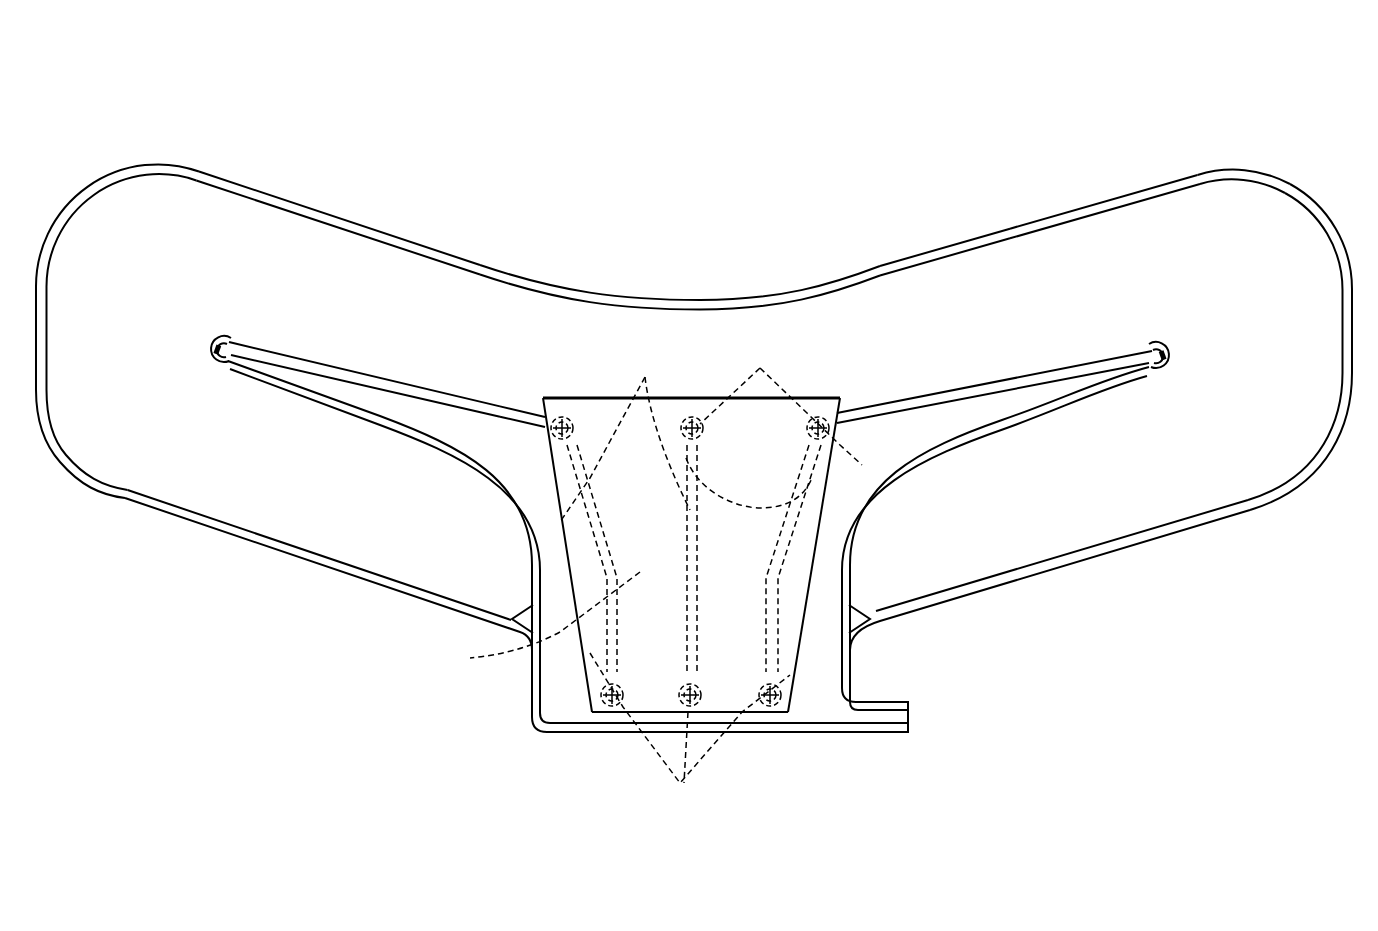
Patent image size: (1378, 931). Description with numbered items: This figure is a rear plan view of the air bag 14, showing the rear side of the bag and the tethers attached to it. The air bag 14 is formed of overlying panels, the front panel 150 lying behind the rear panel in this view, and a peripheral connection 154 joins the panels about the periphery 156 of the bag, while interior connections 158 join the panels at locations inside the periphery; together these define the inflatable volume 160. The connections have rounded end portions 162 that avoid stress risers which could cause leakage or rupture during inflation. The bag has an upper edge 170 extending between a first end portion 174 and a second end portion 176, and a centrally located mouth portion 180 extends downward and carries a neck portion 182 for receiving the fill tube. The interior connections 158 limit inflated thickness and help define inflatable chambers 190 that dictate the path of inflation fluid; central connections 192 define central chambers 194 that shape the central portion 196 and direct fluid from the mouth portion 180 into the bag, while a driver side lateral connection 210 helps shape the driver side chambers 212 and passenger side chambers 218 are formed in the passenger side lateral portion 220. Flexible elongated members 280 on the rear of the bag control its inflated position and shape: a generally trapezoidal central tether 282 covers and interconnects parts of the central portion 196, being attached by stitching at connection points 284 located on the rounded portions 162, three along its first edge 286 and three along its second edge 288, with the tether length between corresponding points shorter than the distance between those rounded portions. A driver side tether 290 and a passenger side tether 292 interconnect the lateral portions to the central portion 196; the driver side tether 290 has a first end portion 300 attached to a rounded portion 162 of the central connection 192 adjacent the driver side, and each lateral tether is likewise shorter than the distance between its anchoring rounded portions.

The air bag 14 is at (1256, 139).
The front panel 150 is at (988, 307).
The peripheral connection 154 is at (860, 273).
The periphery 156 is at (770, 293).
The interior connections 158 is at (358, 410).
The inflatable volume 160 is at (460, 312).
The end portions 162 is at (205, 343).
The upper edge 170 is at (587, 297).
The first end portion 174 is at (1263, 233).
The second end portion 176 is at (143, 235).
The mouth portion 180 is at (818, 697).
The neck portion 182 is at (867, 722).
The inflatable chambers 190 is at (270, 420).
The central connections 192 is at (625, 432).
The central chambers 194 is at (698, 648).
The central portion 196 is at (655, 545).
The driver side lateral connection 210 is at (713, 465).
The driver side chambers 212 is at (328, 393).
The passenger side chambers 218 is at (1050, 397).
The passenger side lateral portion 220 is at (1130, 275).
The flexible elongated members 280 is at (408, 393).
The central tether 282 is at (488, 571).
The connection points 284 is at (562, 432).
The first edge 286 is at (577, 400).
The second edge 288 is at (613, 715).
The driver side tether 290 is at (364, 354).
The passenger side tether 292 is at (994, 370).
The first end portion 300 is at (545, 420).